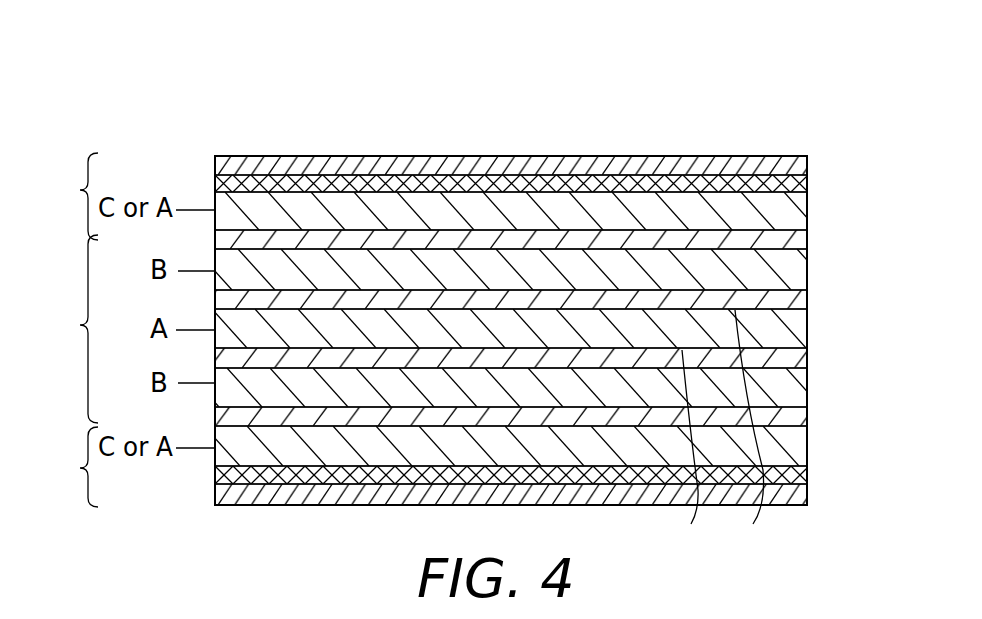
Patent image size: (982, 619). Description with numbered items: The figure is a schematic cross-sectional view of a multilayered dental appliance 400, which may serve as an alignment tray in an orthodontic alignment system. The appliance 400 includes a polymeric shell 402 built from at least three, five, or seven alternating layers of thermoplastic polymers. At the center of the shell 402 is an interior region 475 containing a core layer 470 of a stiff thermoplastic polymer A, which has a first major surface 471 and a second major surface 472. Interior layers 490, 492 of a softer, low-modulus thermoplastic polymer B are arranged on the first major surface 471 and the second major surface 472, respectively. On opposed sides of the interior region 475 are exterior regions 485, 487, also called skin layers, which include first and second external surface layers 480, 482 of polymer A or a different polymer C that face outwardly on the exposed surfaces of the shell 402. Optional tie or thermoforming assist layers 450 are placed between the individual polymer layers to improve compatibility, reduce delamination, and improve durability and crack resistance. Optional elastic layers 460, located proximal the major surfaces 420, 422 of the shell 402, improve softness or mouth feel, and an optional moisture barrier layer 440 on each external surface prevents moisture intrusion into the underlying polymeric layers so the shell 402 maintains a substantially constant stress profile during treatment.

The multilayered dental appliance 400 is at (168, 51).
The polymeric shell 402 is at (226, 138).
The major surface 420 is at (213, 171).
The major surface 422 is at (213, 491).
The moisture barrier layer 440 is at (740, 168).
The tie or thermoforming assist layer 450 is at (800, 241).
The elastic layer 460 is at (803, 180).
The core layer 470 is at (796, 330).
The first major surface 471 is at (756, 433).
The second major surface 472 is at (685, 453).
The interior region 475 is at (64, 329).
The first external surface layer 480 is at (796, 211).
The second external surface layer 482 is at (796, 445).
The exterior region 485 is at (64, 196).
The exterior region 487 is at (64, 467).
The interior layer 490 is at (796, 273).
The interior layer 492 is at (796, 388).